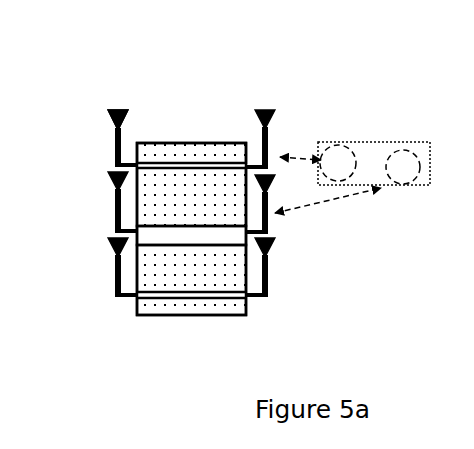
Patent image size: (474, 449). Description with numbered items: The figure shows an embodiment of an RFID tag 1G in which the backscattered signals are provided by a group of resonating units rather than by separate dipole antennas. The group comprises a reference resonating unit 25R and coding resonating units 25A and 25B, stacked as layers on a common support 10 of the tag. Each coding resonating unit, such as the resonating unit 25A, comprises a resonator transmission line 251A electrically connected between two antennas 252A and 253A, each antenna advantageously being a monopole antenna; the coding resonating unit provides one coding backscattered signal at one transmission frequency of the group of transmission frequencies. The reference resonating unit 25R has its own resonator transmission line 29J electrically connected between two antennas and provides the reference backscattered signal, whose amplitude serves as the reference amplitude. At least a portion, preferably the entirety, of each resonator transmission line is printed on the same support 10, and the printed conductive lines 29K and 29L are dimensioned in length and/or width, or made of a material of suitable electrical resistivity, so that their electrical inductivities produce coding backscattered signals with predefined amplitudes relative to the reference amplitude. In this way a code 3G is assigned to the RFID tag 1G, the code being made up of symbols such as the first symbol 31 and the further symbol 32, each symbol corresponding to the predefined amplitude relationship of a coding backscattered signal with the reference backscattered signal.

The RFID tag 1G is at (60, 72).
The coding resonating unit 25A is at (100, 150).
The coding resonating unit 25B is at (100, 218).
The reference resonating unit 25R is at (105, 280).
The antenna 252A is at (123, 110).
The antenna 253A is at (272, 110).
The resonator transmission line 251A is at (177, 150).
The printed electrical conductive portion 29K is at (163, 160).
The printed electrical conductive portion 29L is at (170, 233).
The resonator transmission line 29J is at (222, 299).
The support 10 is at (213, 218).
The symbol 31 is at (345, 130).
The symbol 32 is at (403, 147).
The code 3G is at (396, 178).